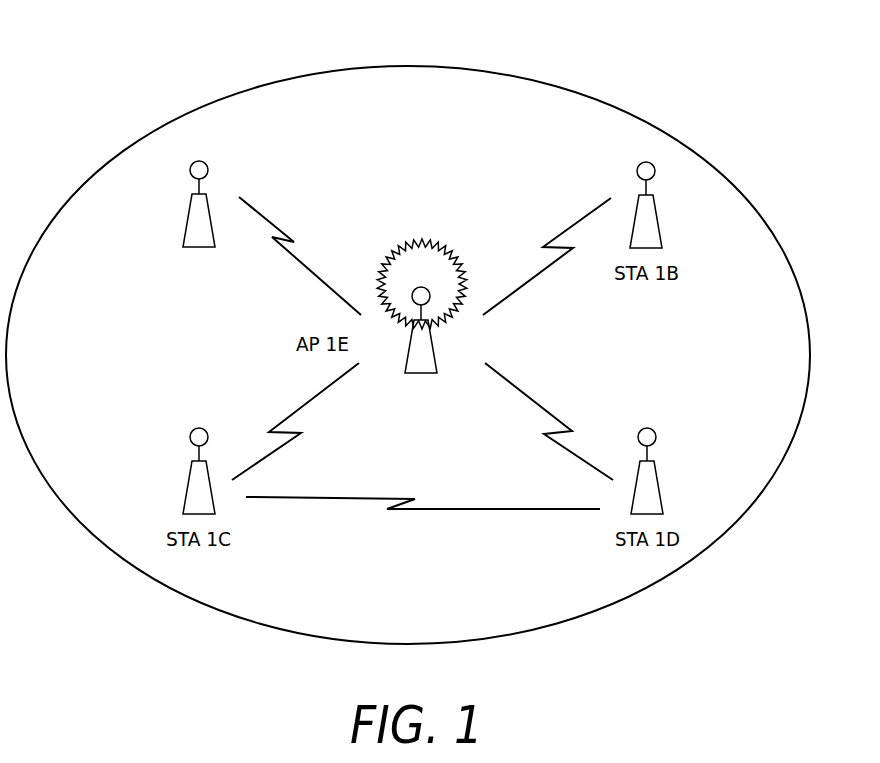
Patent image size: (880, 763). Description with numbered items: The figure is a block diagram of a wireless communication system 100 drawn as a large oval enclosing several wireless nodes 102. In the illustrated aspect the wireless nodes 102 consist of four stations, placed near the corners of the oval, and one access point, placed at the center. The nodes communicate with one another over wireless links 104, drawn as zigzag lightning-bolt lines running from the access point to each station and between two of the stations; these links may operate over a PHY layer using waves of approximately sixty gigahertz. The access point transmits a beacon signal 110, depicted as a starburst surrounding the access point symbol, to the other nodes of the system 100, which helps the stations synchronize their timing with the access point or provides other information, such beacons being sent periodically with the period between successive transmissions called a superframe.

The wireless communication system 100 is at (148, 93).
The wireless nodes 102 is at (187, 223).
The wireless links 104 is at (525, 288).
The beacon signal 110 is at (402, 198).